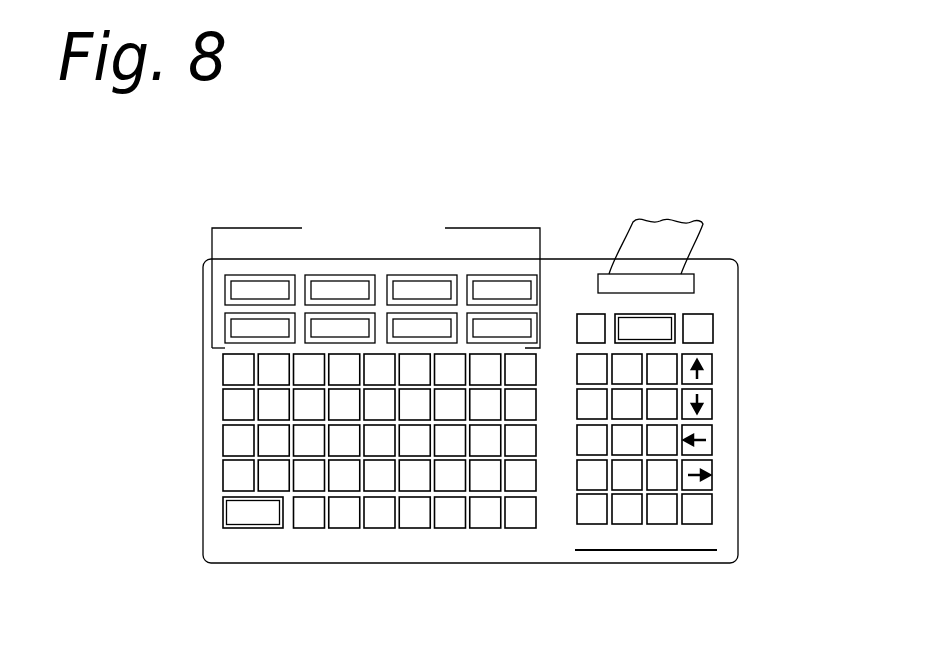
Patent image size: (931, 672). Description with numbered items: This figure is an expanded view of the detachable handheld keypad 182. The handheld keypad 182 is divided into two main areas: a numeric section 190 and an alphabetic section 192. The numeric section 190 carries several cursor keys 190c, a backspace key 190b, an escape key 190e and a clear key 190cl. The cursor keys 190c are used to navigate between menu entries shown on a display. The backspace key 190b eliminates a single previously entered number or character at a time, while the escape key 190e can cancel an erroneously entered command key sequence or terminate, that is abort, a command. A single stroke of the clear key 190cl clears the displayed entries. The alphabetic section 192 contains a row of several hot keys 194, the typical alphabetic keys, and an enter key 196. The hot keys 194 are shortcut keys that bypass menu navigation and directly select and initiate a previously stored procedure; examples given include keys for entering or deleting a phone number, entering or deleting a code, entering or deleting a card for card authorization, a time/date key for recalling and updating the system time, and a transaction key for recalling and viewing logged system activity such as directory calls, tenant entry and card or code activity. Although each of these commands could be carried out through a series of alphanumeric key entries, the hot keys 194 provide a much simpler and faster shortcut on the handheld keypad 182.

The detachable handheld keypad 182 is at (217, 565).
The numeric section 190 is at (650, 567).
The backspace key 190b is at (719, 322).
The cursor keys 190c is at (724, 372).
The clear key 190cl is at (588, 311).
The escape key 190e is at (651, 311).
The alphabetic section 192 is at (430, 565).
The hot keys 194 is at (326, 206).
The enter key 196 is at (270, 528).